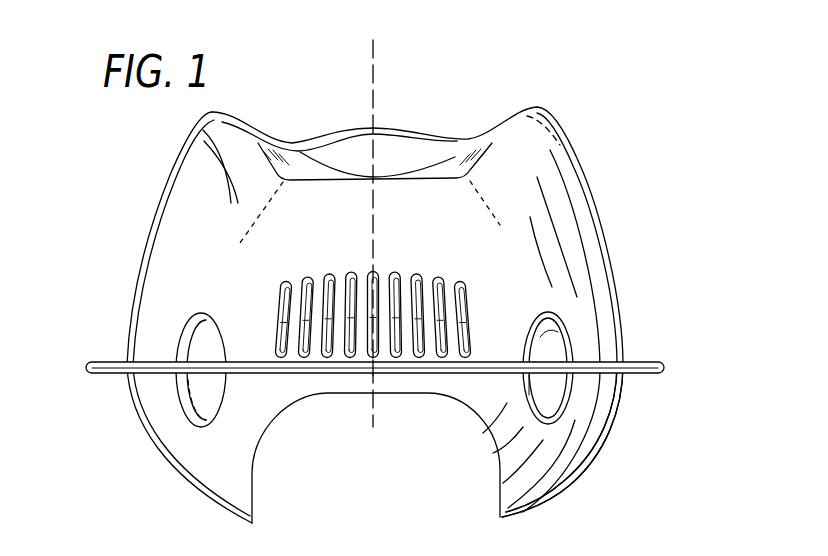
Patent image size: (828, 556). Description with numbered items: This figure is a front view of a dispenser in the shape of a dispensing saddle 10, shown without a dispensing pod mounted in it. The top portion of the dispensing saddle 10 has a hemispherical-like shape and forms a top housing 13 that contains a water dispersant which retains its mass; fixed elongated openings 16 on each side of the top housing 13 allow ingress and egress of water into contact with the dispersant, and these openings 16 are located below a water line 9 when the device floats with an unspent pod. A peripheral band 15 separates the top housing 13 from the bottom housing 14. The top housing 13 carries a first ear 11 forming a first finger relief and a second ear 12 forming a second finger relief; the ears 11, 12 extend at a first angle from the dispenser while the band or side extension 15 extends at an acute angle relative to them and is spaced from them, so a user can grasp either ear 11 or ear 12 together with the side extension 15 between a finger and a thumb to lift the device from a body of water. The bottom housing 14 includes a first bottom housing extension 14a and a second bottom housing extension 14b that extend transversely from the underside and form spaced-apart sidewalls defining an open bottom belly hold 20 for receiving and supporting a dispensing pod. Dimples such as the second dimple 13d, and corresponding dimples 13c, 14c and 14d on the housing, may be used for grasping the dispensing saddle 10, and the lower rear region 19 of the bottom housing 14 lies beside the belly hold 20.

The water line 9 is at (375, 63).
The dispensing saddle 10 is at (625, 165).
The first ear 11 is at (505, 120).
The second ear 12 is at (238, 121).
The top housing 13 is at (593, 248).
The right side opening upper part 13c is at (553, 343).
The second dimple 13d is at (200, 345).
The bottom housing 14 is at (590, 467).
The first bottom housing extension 14a is at (557, 490).
The second bottom housing extension 14b is at (160, 468).
The right side opening lower part 14c is at (557, 397).
The left side opening lower part 14d is at (203, 392).
The peripheral band 15 is at (657, 358).
The elongated openings 16 is at (282, 288).
The lower rear portion 19 is at (487, 440).
The belly hold 20 is at (388, 469).